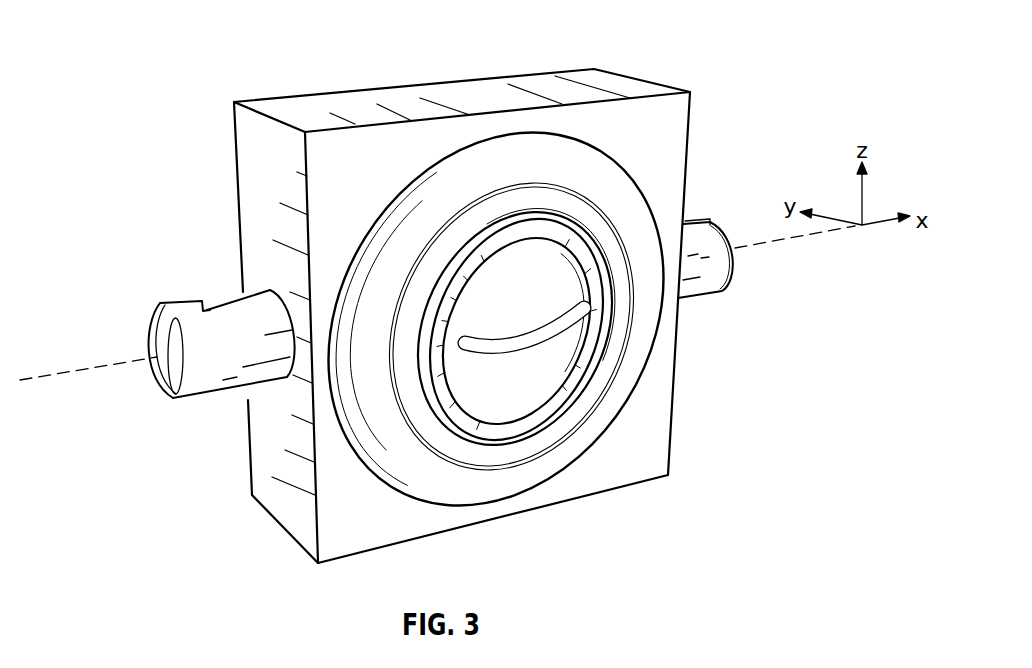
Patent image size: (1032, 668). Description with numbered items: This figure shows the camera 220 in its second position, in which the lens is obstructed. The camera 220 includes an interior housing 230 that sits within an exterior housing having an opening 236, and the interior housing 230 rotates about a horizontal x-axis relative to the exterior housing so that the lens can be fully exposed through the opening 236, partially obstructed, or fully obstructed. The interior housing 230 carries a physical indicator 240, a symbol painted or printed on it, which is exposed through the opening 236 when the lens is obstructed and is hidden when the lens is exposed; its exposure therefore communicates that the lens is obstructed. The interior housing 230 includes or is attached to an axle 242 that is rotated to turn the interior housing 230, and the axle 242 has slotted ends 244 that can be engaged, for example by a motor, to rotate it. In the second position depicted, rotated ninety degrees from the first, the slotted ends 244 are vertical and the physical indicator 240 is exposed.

The camera 220 is at (204, 74).
The interior housing 230 is at (489, 426).
The opening 236 is at (588, 400).
The physical indicator 240 is at (538, 338).
The axle 242 is at (218, 303).
The slotted ends 244 is at (150, 374).